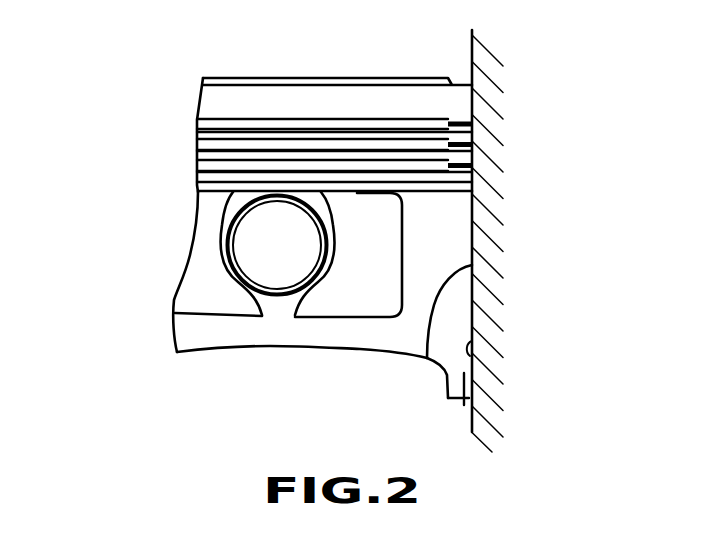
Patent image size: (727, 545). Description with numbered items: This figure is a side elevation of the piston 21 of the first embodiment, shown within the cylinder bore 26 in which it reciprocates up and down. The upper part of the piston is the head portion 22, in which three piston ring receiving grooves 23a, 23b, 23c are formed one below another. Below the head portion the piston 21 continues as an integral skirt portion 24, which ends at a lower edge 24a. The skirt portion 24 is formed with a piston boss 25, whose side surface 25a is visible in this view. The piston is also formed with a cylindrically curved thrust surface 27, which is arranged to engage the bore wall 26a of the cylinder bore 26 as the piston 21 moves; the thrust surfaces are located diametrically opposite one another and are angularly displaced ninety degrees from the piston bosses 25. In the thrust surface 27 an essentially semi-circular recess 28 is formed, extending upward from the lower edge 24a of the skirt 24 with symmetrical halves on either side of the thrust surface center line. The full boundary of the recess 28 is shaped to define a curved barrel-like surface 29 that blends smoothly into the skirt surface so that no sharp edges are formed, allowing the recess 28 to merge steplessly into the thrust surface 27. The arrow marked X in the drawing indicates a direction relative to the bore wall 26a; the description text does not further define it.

The piston 21 is at (142, 247).
The head portion 22 is at (350, 90).
The piston ring receiving groove 23a is at (197, 123).
The piston ring receiving groove 23b is at (197, 142).
The piston ring receiving groove 23c is at (197, 162).
The skirt portion 24 is at (209, 340).
The lower edge of skirt 24a is at (476, 428).
The piston boss 25 is at (313, 288).
The side surface of piston boss 25a is at (193, 297).
The cylinder bore 26 is at (490, 150).
The bore wall 26a is at (479, 355).
The thrust surface 27 is at (473, 195).
The recess 28 is at (455, 310).
The barrel-like surface 29 is at (477, 255).
The thrust direction X is at (478, 334).